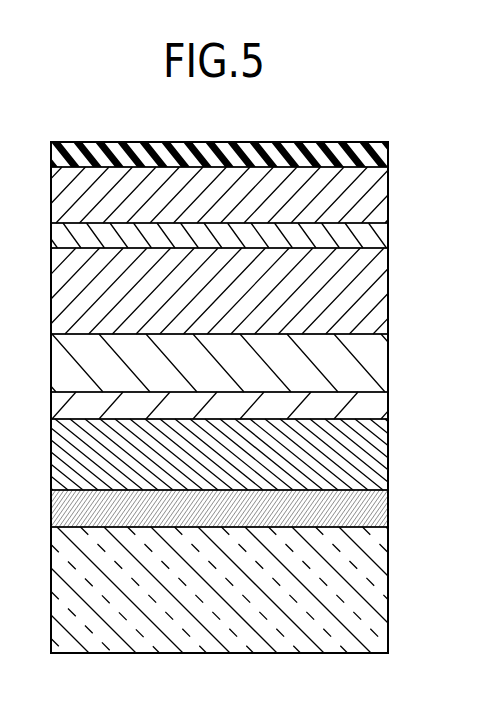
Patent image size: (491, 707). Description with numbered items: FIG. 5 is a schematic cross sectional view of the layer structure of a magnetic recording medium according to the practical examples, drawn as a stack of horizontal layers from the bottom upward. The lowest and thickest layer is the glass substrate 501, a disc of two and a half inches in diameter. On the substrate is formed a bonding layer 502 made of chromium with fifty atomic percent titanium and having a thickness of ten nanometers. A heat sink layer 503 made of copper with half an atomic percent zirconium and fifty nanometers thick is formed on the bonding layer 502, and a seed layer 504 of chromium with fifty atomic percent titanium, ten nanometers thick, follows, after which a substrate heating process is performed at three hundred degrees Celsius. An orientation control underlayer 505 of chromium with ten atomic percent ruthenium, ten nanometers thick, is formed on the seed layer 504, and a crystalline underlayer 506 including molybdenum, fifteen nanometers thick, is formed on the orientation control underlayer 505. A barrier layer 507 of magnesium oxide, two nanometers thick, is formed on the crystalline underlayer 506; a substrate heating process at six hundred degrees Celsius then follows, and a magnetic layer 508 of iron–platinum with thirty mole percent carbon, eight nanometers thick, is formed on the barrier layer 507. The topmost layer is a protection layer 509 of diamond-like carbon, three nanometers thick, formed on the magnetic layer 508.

The substrate 501 is at (377, 591).
The bonding layer 502 is at (377, 510).
The heat sink layer 503 is at (377, 456).
The seed layer 504 is at (377, 405).
The orientation control underlayer 505 is at (377, 365).
The crystalline underlayer 506 is at (377, 288).
The barrier layer 507 is at (377, 236).
The magnetic layer 508 is at (377, 192).
The sealing layer 509 is at (377, 152).